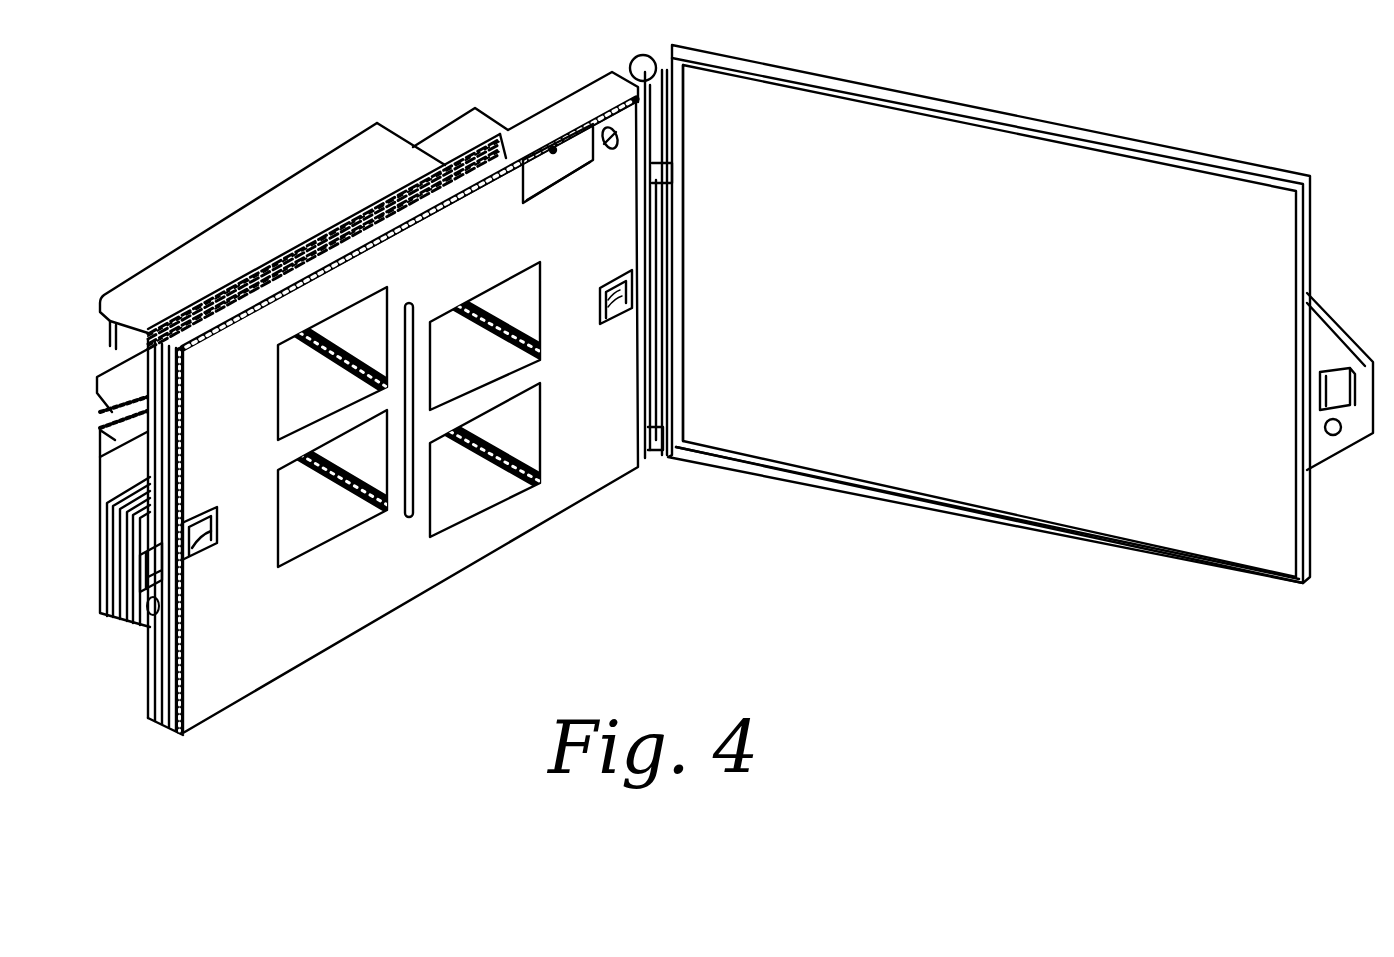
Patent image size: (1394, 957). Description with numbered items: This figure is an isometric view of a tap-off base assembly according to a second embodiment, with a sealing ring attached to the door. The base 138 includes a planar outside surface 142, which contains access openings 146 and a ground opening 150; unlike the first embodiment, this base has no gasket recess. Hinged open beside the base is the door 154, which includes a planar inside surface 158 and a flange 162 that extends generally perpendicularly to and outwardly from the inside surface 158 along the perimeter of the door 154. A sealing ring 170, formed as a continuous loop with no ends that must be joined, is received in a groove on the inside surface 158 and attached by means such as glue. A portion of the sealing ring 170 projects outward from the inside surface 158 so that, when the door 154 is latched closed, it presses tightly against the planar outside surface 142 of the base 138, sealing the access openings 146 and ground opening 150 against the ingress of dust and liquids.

The base 138 is at (262, 710).
The planar outside surface 142 is at (192, 323).
The access openings 146 is at (457, 365).
The ground opening 150 is at (573, 137).
The door 154 is at (1028, 327).
The planar inside surface 158 is at (1056, 417).
The flange 162 is at (1093, 133).
The sealing ring 170 is at (887, 485).